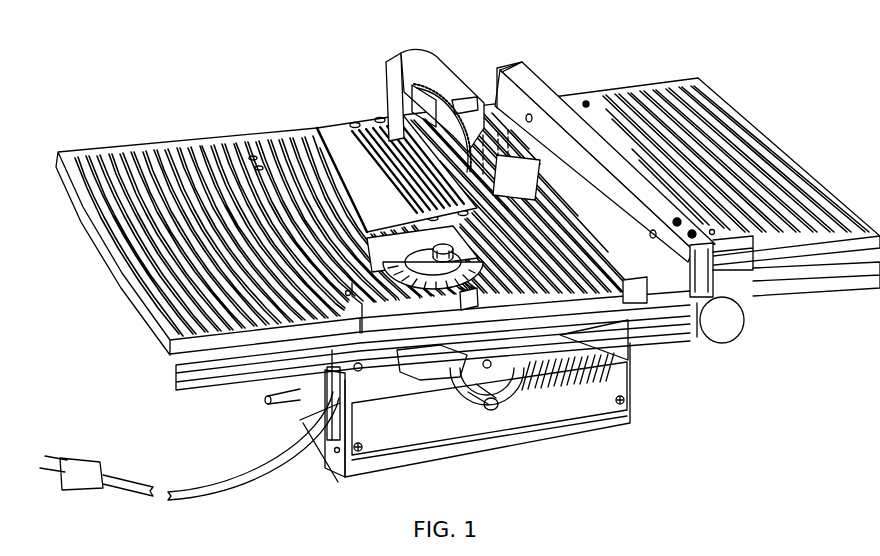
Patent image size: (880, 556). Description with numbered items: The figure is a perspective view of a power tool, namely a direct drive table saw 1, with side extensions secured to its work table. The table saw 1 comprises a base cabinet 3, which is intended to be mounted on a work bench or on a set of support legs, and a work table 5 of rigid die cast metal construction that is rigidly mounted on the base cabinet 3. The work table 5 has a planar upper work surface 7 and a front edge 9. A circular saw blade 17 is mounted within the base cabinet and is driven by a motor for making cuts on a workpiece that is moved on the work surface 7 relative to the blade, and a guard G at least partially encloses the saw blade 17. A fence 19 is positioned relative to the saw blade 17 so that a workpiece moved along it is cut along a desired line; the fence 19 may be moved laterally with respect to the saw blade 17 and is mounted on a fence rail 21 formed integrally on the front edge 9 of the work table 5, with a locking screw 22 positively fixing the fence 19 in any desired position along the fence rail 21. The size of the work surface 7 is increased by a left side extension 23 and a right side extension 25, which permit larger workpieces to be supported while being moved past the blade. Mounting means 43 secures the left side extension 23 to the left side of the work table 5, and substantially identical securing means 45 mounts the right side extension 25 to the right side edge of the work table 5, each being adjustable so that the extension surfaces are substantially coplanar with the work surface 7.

The table saw 1 is at (633, 426).
The base cabinet 3 is at (483, 455).
The work table 5 is at (352, 115).
The upper work surface 7 is at (323, 118).
The front edge 9 is at (597, 305).
The circular saw blade 17 is at (453, 140).
The fence 19 is at (603, 159).
The fence rail 21 is at (340, 418).
The locking screw 22 is at (745, 316).
The left side extension 23 is at (128, 321).
The right side extension 25 is at (769, 130).
The mounting means 43 is at (252, 157).
The securing means 45 is at (587, 100).
The guard G is at (430, 58).